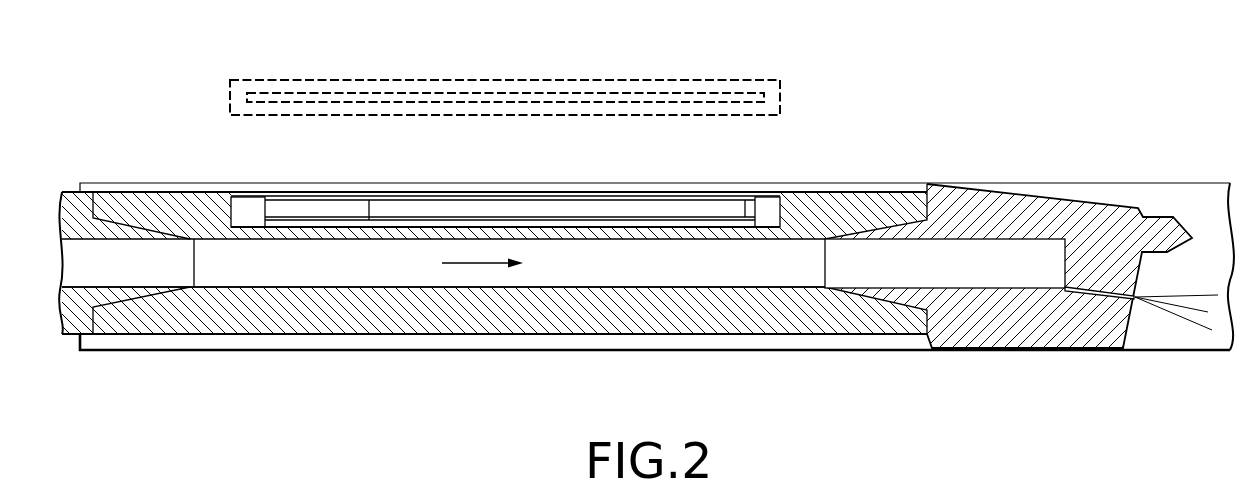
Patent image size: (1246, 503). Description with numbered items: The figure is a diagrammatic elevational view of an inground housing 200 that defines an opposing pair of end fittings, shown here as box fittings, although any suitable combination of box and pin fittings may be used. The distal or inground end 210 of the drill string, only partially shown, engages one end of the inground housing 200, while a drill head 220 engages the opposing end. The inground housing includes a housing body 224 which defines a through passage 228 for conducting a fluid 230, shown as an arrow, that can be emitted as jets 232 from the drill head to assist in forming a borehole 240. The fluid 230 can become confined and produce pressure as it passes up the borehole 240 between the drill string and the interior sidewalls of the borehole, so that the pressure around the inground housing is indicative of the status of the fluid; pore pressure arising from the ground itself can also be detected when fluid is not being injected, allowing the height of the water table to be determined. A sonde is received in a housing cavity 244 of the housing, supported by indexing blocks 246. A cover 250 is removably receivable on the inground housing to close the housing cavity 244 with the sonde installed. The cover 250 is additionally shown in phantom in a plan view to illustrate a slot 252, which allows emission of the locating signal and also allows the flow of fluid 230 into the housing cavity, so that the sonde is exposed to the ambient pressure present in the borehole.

The inground housing 200 is at (859, 183).
The inground end of the drill string 210 is at (73, 337).
The drill head 220 is at (1040, 197).
The housing body 224 is at (285, 335).
The through passage 228 is at (388, 287).
The fluid 230 is at (470, 263).
The jets 232 is at (1178, 318).
The borehole 240 is at (1123, 185).
The housing cavity 244 is at (227, 217).
The indexing blocks 246 is at (247, 200).
The cover 250 is at (553, 197).
The slot 252 is at (597, 92).